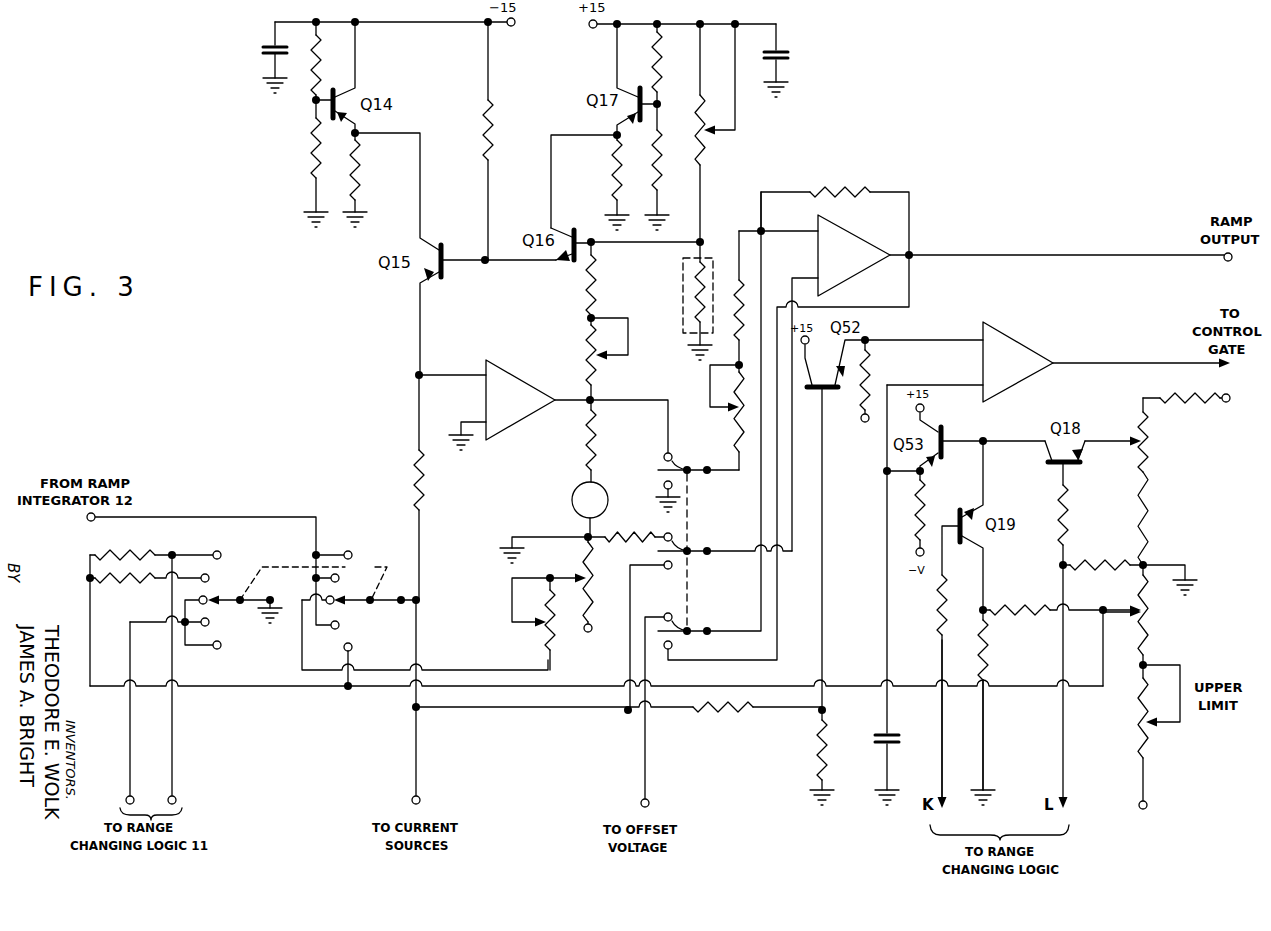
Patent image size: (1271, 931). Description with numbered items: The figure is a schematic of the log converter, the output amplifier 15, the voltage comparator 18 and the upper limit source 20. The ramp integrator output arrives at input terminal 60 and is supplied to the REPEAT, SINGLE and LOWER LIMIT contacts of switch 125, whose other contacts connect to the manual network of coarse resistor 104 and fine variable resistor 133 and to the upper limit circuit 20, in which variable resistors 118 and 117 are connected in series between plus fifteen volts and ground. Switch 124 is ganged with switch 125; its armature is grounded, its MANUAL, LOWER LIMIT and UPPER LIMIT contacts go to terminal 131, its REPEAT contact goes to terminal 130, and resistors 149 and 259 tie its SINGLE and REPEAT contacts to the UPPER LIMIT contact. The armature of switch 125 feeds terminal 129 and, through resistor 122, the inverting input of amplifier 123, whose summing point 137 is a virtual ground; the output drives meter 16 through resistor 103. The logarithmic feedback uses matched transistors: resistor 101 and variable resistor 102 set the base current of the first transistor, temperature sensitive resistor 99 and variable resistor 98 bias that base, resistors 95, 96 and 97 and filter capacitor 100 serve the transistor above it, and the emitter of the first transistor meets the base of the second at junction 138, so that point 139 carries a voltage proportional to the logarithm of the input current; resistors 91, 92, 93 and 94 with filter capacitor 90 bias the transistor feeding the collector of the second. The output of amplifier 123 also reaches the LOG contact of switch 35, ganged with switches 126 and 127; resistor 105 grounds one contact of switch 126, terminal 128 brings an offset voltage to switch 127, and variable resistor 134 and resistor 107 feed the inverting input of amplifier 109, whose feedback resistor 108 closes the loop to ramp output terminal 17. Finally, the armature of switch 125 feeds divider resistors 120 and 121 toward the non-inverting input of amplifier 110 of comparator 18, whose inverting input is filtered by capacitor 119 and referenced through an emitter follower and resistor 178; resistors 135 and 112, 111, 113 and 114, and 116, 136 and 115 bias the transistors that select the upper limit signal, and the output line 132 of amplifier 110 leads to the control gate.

The filter capacitor 90 is at (262, 49).
The resistor 91 is at (320, 72).
The resistor 92 is at (312, 156).
The resistor 93 is at (358, 172).
The resistor 94 is at (482, 137).
The resistor 95 is at (613, 182).
The resistor 96 is at (661, 164).
The resistor 97 is at (660, 66).
The variable resistor 98 is at (706, 140).
The temperature sensitive resistor 99 is at (682, 290).
The filter capacitor 100 is at (804, 60).
The resistor 101 is at (597, 290).
The variable resistor 102 is at (585, 345).
The resistor 103 is at (586, 440).
The resistor 104 is at (605, 543).
The resistor 105 is at (632, 531).
The resistor 107 is at (733, 342).
The feedback resistor 108 is at (838, 188).
The amplifier 109 is at (845, 268).
The amplifier 110 is at (1010, 348).
The resistor 111 is at (938, 600).
The resistor 112 is at (987, 650).
The resistor 113 is at (1068, 516).
The resistor 114 is at (1112, 560).
The resistor 115 is at (1150, 524).
The resistor 116 is at (1195, 406).
The variable resistor 117 is at (1148, 618).
The variable resistor 118 is at (1138, 720).
The filter capacitor 119 is at (870, 745).
The resistor 120 is at (815, 750).
The resistor 121 is at (728, 715).
The resistor 122 is at (410, 476).
The amplifier 123 is at (513, 380).
The switch 124 is at (232, 606).
The switch 125 is at (385, 596).
The switch 126 is at (692, 548).
The switch 127 is at (692, 628).
The terminal 128 is at (649, 799).
The terminal 129 is at (420, 796).
The terminal 130 is at (176, 796).
The terminal 131 is at (126, 796).
The control gate output line 132 is at (1220, 370).
The variable resistor 133 is at (555, 640).
The potentiometer 134 is at (732, 408).
The resistor 135 is at (1030, 590).
The variable resistor 136 is at (1150, 444).
The summing point 137 is at (416, 373).
The transistor base line 138 is at (489, 264).
The point 139 is at (596, 246).
The resistor 149 is at (140, 584).
The resistor 178 is at (870, 392).
The resistor 259 is at (132, 552).
The meter 16 is at (573, 492).
The ramp output terminal 17 is at (1232, 261).
The output amplifier 15 is at (879, 232).
The voltage comparator 18 is at (1118, 332).
The upper limit source 20 is at (1222, 748).
The switch 35 is at (677, 468).
The input terminal 60 is at (86, 519).